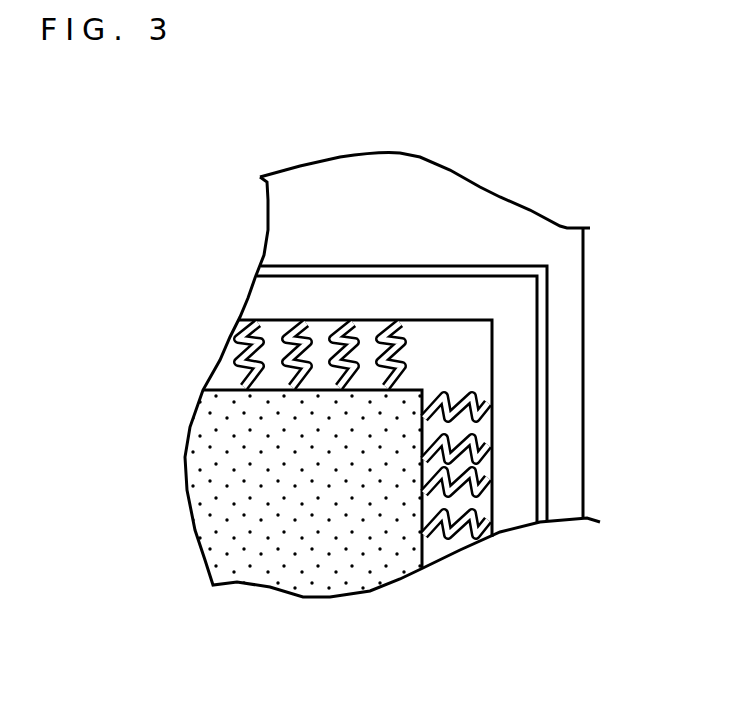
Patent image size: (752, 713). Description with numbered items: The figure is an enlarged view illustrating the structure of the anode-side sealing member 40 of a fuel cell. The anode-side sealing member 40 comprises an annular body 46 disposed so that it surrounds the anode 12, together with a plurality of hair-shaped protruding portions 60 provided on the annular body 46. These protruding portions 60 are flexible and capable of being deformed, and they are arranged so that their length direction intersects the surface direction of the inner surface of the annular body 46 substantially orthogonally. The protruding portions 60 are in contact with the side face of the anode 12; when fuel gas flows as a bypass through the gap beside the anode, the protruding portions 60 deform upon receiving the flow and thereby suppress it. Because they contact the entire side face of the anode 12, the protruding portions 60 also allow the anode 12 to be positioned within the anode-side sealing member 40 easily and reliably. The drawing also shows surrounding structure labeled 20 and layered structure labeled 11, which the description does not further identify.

The housing 20 is at (448, 208).
The outer frame layers 11 is at (538, 355).
The annular body 46 is at (518, 500).
The anode 12 is at (247, 515).
The protruding portions 60 is at (458, 548).
The anode-side sealing member 40 is at (562, 644).